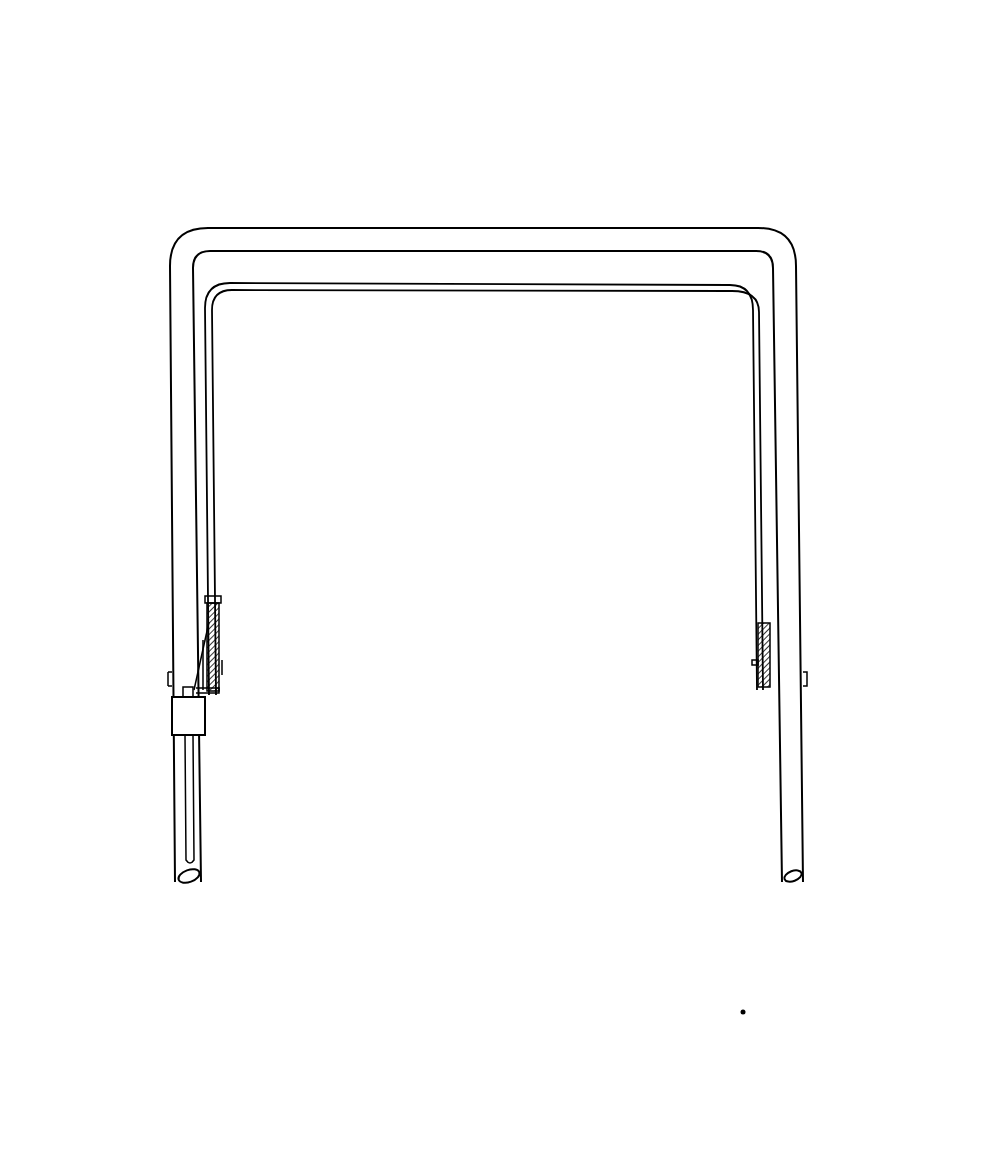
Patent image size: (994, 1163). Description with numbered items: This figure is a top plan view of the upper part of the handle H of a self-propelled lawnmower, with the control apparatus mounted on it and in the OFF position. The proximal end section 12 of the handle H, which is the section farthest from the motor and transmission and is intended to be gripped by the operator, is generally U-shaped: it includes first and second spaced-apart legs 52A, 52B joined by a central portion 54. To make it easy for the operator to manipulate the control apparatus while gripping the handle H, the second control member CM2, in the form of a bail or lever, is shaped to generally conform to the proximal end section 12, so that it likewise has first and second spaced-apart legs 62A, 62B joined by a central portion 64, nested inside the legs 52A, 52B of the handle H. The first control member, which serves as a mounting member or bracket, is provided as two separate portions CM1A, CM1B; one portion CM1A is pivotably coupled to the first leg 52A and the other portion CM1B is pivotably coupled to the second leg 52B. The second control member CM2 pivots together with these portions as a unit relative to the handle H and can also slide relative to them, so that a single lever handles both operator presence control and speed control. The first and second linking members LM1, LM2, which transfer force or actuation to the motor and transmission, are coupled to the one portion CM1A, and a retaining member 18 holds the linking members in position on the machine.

The handle H is at (676, 160).
The proximal end section 12 is at (106, 251).
The central portion 54 is at (430, 228).
The first leg 52A is at (172, 505).
The second leg 52B is at (800, 481).
The second control member CM2 is at (278, 283).
The central portion 64 is at (545, 294).
The first leg 62A is at (218, 437).
The second leg 62B is at (752, 438).
The first control member portion CM1A is at (207, 622).
The first control member portion CM1B is at (770, 633).
The first linking member LM1 is at (196, 664).
The second linking member LM2 is at (205, 693).
The retaining member 18 is at (172, 727).